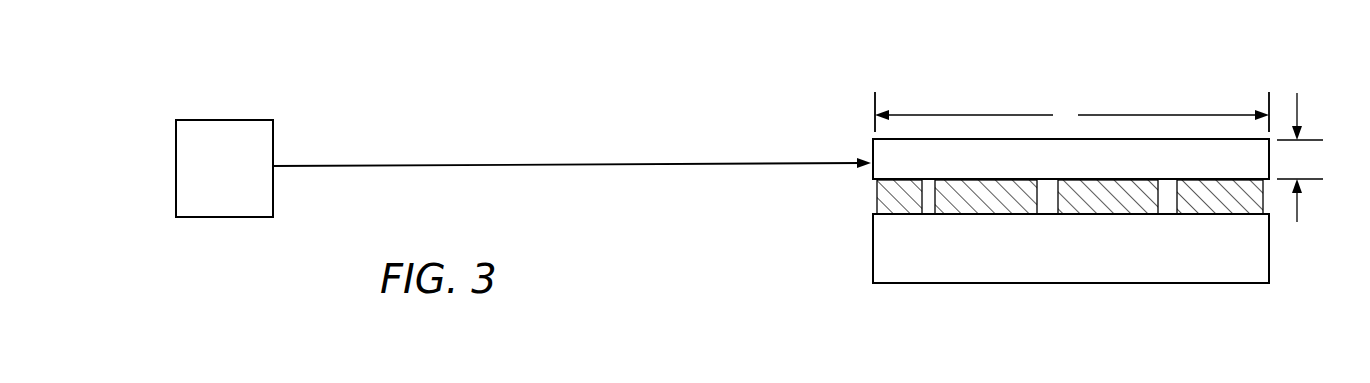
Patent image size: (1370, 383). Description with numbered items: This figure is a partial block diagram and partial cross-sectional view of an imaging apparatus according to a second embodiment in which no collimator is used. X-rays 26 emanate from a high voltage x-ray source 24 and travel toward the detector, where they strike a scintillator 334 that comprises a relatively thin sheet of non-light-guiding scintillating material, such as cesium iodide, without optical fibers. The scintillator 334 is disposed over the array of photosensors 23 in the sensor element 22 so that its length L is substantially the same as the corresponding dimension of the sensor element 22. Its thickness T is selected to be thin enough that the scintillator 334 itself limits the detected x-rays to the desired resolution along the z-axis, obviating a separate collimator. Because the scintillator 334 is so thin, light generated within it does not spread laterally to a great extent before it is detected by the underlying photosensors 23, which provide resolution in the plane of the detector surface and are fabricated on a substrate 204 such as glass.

The high voltage x-ray source 24 is at (237, 120).
The x-rays 26 is at (417, 166).
The scintillator 334 is at (873, 139).
The photosensors 23 is at (872, 172).
The substrate 204 is at (872, 248).
The sensor element 22 is at (1034, 104).